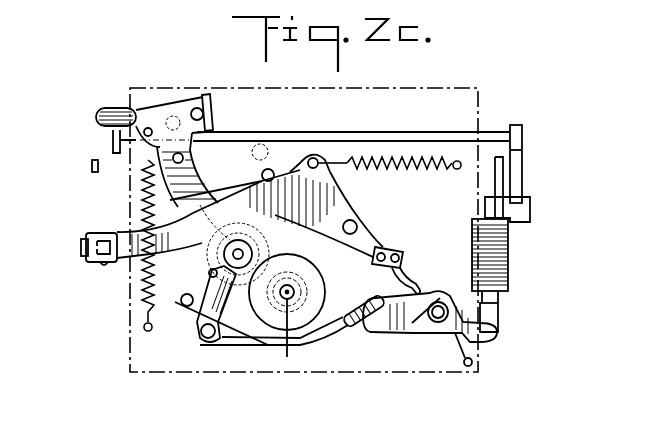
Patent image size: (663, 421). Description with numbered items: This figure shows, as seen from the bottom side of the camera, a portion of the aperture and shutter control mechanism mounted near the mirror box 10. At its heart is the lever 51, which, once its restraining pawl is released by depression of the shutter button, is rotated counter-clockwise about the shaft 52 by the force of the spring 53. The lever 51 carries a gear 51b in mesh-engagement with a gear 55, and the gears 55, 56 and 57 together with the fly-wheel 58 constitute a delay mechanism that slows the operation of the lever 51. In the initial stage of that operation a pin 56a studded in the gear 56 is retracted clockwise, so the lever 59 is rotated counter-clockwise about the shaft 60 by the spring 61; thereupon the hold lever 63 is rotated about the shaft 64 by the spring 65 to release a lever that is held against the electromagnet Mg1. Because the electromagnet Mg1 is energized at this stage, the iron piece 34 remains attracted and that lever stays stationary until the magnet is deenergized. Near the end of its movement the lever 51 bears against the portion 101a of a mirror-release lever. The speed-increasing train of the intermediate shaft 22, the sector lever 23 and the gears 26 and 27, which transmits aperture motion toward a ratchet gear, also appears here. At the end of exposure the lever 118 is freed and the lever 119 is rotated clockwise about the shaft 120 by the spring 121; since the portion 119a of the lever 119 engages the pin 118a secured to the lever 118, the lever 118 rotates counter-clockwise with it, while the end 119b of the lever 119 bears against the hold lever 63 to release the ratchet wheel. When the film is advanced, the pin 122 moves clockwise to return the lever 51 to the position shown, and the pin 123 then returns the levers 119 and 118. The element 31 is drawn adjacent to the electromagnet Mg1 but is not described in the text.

The mirror box 10 is at (463, 87).
The intermediate shaft 22 is at (422, 132).
The sector lever 23 is at (522, 173).
The gear 26 is at (530, 213).
The gear 27 is at (499, 157).
The plunger 31 is at (500, 310).
The iron piece 34 is at (500, 325).
The lever 51 is at (146, 110).
The gear 51b is at (214, 203).
The shaft 52 is at (182, 155).
The spring 53 is at (142, 190).
The gear 55 is at (289, 284).
The gear 56 is at (245, 214).
The pin 56a is at (209, 274).
The gear 57 is at (300, 333).
The fly-wheel 58 is at (318, 300).
The lever 59 is at (347, 326).
The shaft 60 is at (208, 338).
The spring 61 is at (235, 338).
The hold lever 63 is at (382, 323).
The shaft 64 is at (445, 298).
The spring 65 is at (428, 325).
The portion of lever 101a is at (92, 170).
The lever 118 is at (85, 260).
The pin 118a is at (84, 243).
The lever 119 is at (340, 190).
The portion of lever 119a is at (107, 263).
The end of lever 119b is at (408, 274).
The shaft 120 is at (357, 220).
The spring 121 is at (426, 172).
The pin 122 is at (198, 108).
The pin 123 is at (272, 170).
The electromagnet Mg1 is at (510, 265).